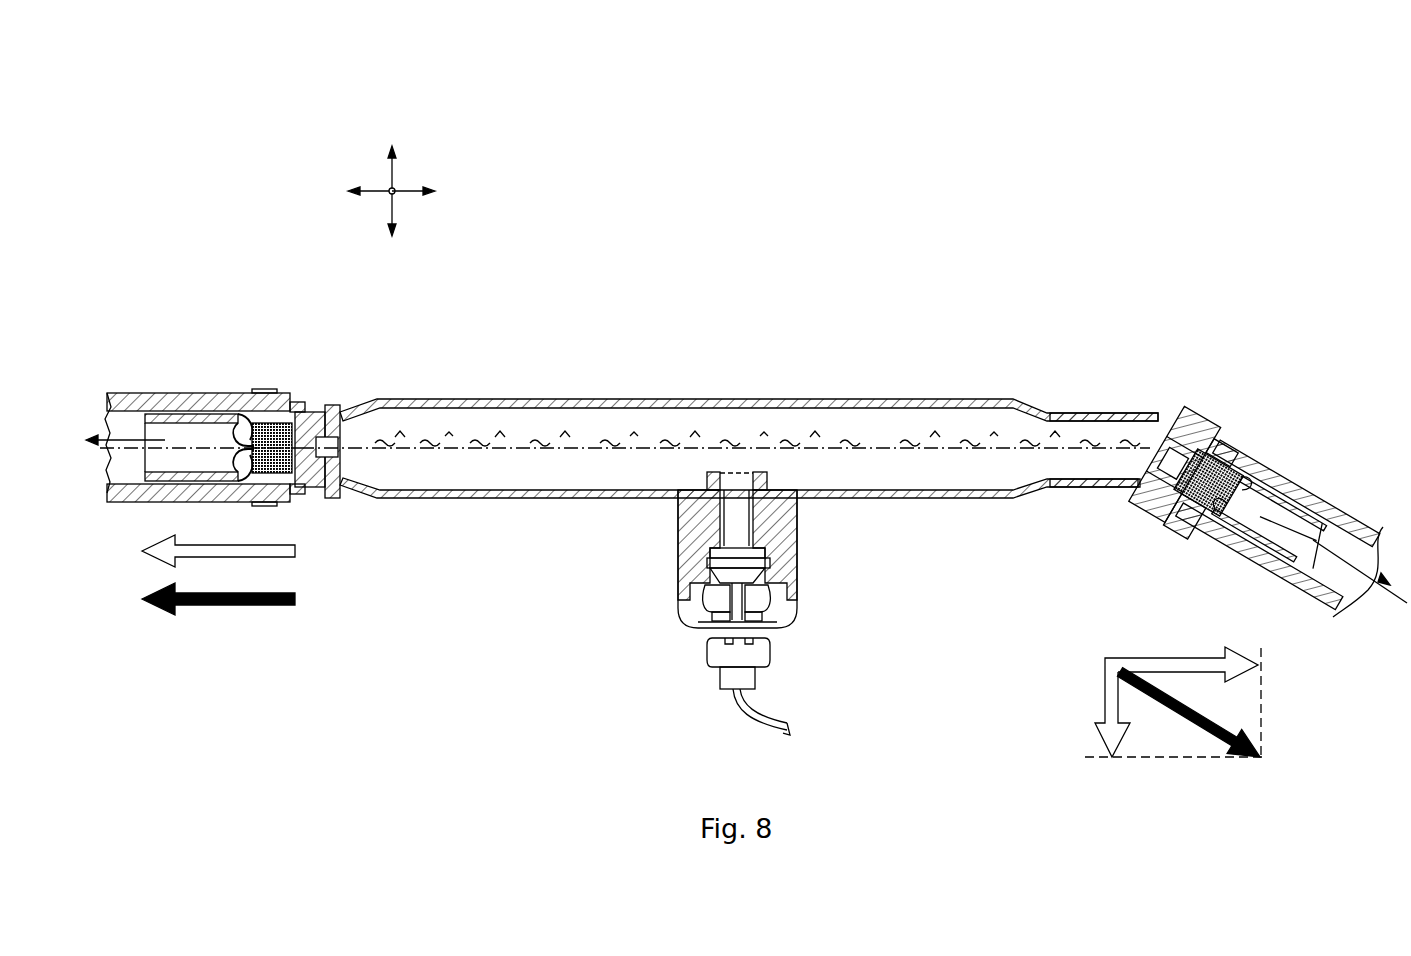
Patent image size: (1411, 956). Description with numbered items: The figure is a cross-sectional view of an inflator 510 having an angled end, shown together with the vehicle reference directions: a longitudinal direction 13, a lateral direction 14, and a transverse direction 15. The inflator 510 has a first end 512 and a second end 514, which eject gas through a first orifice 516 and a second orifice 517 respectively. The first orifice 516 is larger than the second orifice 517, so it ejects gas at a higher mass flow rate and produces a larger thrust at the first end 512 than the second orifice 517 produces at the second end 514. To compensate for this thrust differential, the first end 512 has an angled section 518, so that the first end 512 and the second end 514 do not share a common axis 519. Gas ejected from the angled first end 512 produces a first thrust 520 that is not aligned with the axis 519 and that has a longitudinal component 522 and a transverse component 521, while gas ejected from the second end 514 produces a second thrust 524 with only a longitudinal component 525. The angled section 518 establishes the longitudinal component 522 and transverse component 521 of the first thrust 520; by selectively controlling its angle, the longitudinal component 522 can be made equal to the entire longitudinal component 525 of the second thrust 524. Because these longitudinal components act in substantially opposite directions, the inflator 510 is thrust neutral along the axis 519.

The longitudinal direction 13 is at (412, 195).
The lateral direction 14 is at (388, 195).
The transverse direction 15 is at (392, 173).
The inflator 510 is at (818, 302).
The first end 512 is at (1110, 410).
The second end 514 is at (400, 400).
The first orifice 516 is at (1200, 440).
The second orifice 517 is at (307, 443).
The angled section 518 is at (1172, 420).
The axis 519 is at (636, 445).
The first thrust 520 is at (1193, 708).
The transverse component 521 is at (1105, 698).
The longitudinal component 522 is at (1163, 662).
The second thrust 524 is at (295, 599).
The longitudinal component 525 is at (295, 551).